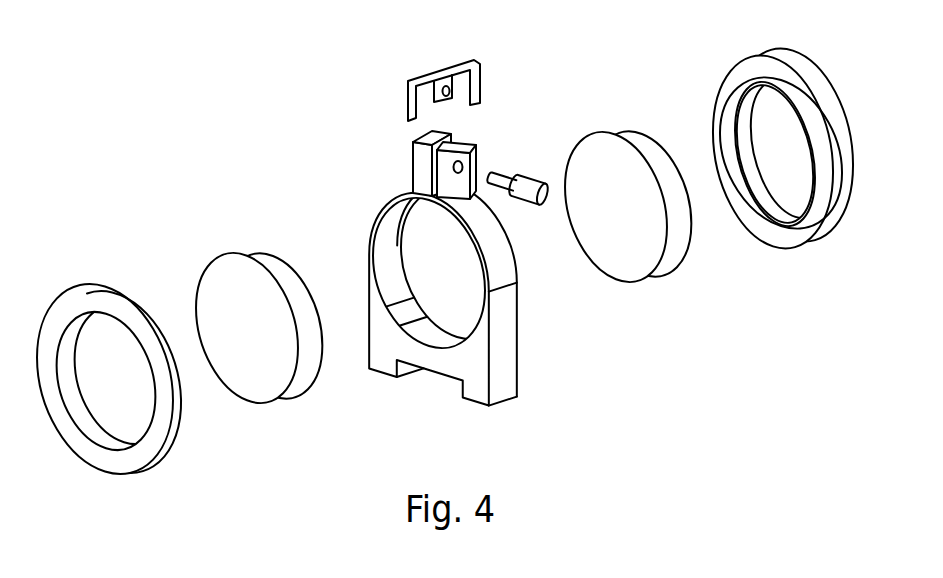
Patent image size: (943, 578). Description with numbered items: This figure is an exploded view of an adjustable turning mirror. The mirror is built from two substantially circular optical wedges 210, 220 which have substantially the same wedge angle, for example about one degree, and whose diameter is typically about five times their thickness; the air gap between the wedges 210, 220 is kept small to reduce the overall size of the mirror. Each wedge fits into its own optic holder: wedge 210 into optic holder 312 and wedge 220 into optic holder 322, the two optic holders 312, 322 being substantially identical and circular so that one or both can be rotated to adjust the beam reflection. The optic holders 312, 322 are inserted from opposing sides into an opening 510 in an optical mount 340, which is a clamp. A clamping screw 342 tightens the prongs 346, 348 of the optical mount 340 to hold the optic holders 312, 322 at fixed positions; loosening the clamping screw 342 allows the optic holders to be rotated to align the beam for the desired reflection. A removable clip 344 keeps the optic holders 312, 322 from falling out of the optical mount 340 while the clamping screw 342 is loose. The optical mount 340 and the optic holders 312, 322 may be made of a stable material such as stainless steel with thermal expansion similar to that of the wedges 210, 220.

The wedge 210 is at (258, 257).
The wedge 220 is at (623, 130).
The optic holder 312 is at (100, 282).
The optic holder 322 is at (782, 55).
The optical mount 340 is at (517, 312).
The clamping screw 342 is at (507, 168).
The removable clip 344 is at (470, 57).
The prong 346 is at (410, 163).
The prong 348 is at (475, 143).
The opening 510 is at (420, 246).